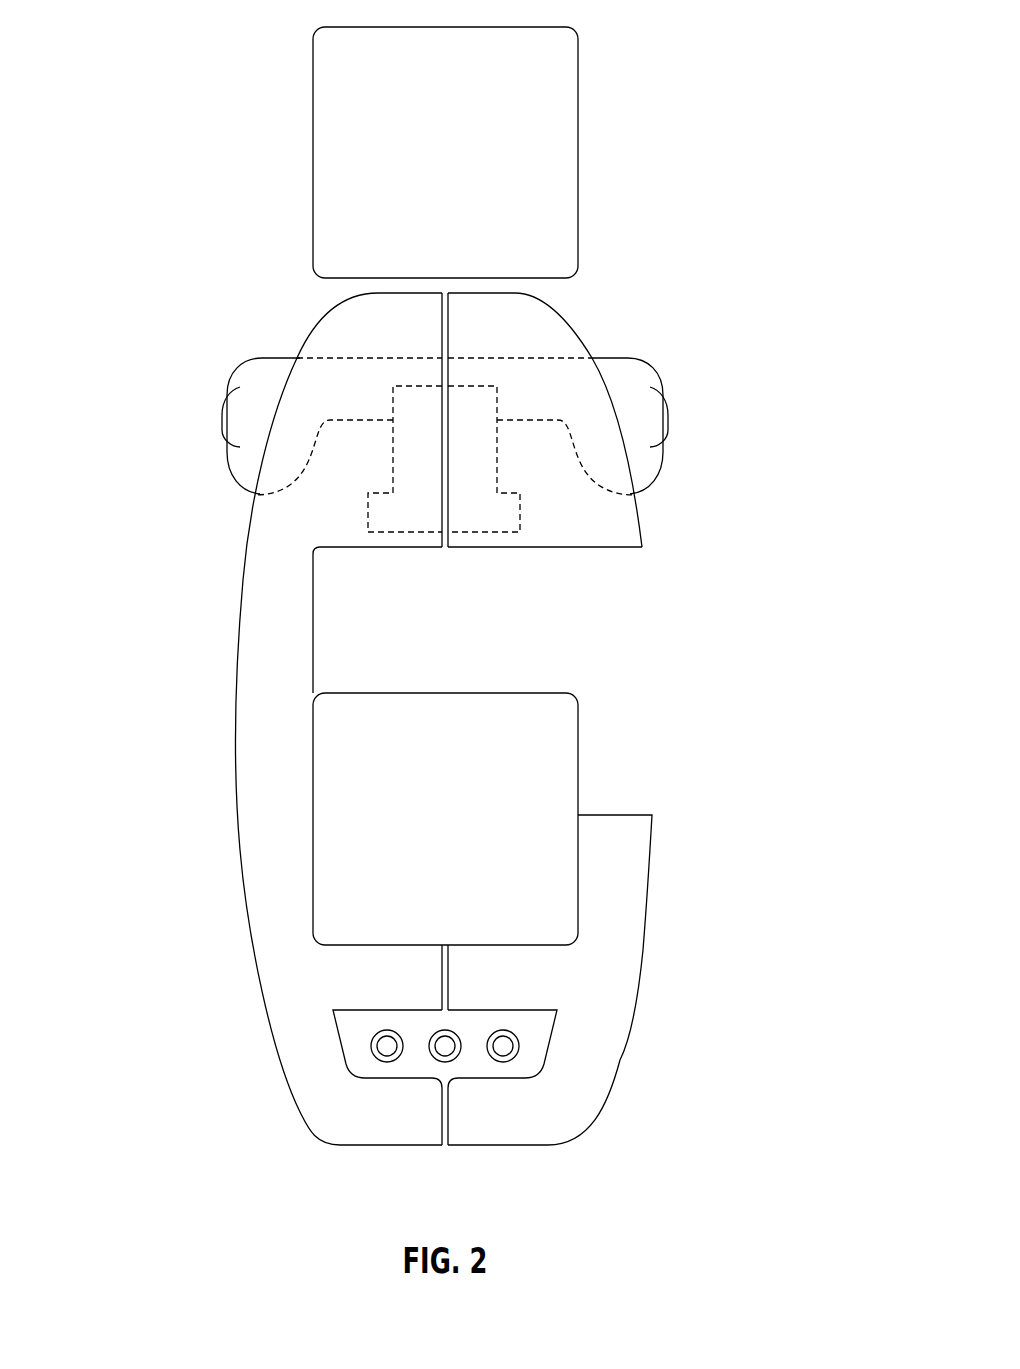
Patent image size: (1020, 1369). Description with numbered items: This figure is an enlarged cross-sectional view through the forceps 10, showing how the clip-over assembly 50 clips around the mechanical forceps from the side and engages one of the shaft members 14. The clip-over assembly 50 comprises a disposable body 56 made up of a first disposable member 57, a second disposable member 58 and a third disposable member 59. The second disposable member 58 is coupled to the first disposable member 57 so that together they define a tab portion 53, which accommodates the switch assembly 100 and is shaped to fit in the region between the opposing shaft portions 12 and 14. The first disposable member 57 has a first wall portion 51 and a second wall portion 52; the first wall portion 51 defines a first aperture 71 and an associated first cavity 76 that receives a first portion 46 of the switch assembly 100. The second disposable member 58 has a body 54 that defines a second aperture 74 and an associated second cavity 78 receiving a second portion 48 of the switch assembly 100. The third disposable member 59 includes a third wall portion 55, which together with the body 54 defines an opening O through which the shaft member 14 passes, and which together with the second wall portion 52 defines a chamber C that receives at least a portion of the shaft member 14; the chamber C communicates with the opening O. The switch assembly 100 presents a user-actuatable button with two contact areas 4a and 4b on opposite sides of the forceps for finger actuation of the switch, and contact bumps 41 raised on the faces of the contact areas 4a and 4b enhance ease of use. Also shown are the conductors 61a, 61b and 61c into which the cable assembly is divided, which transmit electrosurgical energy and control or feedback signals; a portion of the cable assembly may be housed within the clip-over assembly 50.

The forceps 10 is at (695, 30).
The shaft portion 12 is at (445, 152).
The shaft member 14 is at (445, 819).
The clip-over assembly 50 is at (176, 281).
The first wall portion 51 is at (328, 329).
The second wall portion 52 is at (253, 818).
The tab portion 53 is at (292, 271).
The body 54 is at (623, 530).
The third wall portion 55 is at (638, 863).
The disposable body 56 is at (623, 1116).
The first disposable member 57 is at (215, 690).
The second disposable member 58 is at (617, 336).
The third disposable member 59 is at (644, 1031).
The switch assembly 100 is at (204, 475).
The contact area 4a is at (665, 412).
The contact area 4b is at (225, 412).
The contact bump 41 is at (665, 432).
The first portion of the switch assembly 46 is at (335, 488).
The second portion of the switch assembly 48 is at (558, 502).
The first aperture 71 is at (255, 496).
The second aperture 74 is at (636, 498).
The first cavity 76 is at (400, 540).
The second cavity 78 is at (487, 540).
The conductor 61a is at (371, 1046).
The conductor 61b is at (429, 1046).
The conductor 61c is at (519, 1046).
The opening O is at (623, 673).
The chamber C is at (594, 782).